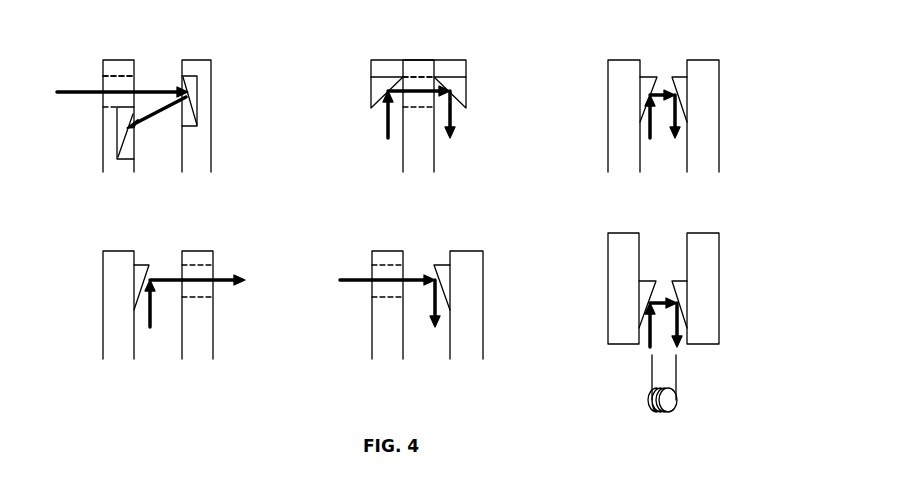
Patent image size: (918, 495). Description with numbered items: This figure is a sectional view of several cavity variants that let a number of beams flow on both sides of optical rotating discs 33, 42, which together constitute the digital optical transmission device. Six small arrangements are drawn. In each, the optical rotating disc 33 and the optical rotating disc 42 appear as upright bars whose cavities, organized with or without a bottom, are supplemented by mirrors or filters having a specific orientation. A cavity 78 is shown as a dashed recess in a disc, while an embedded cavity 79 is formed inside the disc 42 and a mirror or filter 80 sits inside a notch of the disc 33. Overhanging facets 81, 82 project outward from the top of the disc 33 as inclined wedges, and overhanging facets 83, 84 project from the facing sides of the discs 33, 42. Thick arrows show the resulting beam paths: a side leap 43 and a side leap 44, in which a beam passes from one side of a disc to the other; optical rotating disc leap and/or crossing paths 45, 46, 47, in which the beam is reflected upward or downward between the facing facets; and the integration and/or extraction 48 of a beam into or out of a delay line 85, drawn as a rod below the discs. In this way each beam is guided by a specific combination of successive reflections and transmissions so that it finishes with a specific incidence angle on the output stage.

The optical rotating disc 33 is at (113, 70).
The optical rotating disc 42 is at (198, 67).
The side leap 43 is at (86, 95).
The side leap 44 is at (452, 107).
The optical rotating disc leap and/or crossing 45 is at (680, 125).
The optical rotating disc leap and/or crossing 46 is at (228, 288).
The optical rotating disc leap and/or crossing 47 is at (437, 308).
The integration and/or extraction in a delay line 48 is at (680, 345).
The cavity 78 is at (120, 74).
The embedded cavity 79 is at (197, 82).
The mirror or filter 80 is at (116, 130).
The overhanging facet 81 is at (378, 82).
The overhanging facet 82 is at (463, 83).
The overhanging facet 83 is at (648, 76).
The overhanging facet 84 is at (678, 72).
The delay line 85 is at (645, 395).